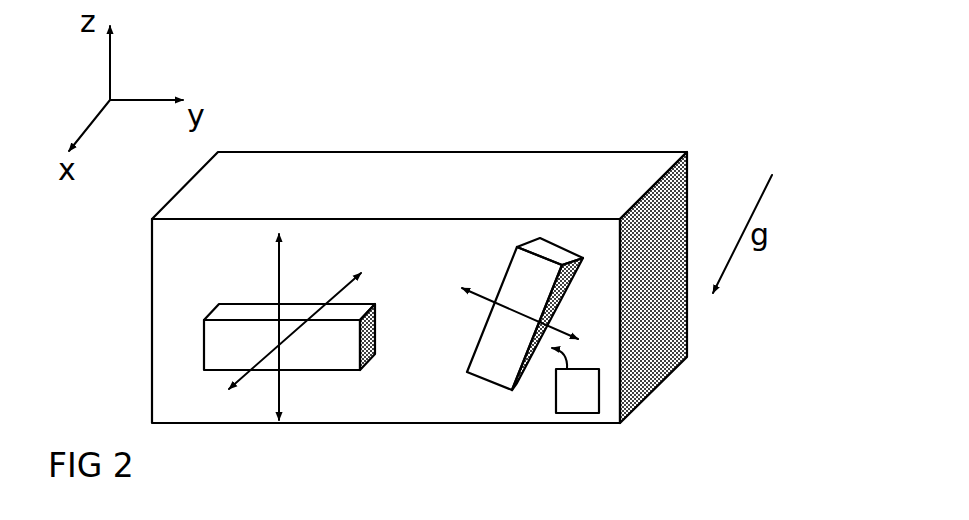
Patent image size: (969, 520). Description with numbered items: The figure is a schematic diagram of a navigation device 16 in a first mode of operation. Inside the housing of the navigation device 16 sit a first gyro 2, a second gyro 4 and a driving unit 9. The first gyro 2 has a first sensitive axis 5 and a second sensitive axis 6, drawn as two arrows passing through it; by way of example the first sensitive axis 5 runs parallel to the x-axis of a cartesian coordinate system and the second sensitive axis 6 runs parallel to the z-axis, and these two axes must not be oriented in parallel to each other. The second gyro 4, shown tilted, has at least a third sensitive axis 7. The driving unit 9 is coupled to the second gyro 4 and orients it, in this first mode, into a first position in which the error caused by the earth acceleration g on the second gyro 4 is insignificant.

The navigation device 16 is at (153, 305).
The first gyro 2 is at (320, 370).
The second gyro 4 is at (503, 389).
The first sensitive axis 5 is at (239, 386).
The second sensitive axis 6 is at (281, 400).
The third sensitive axis 7 is at (483, 292).
The driving unit 9 is at (578, 414).